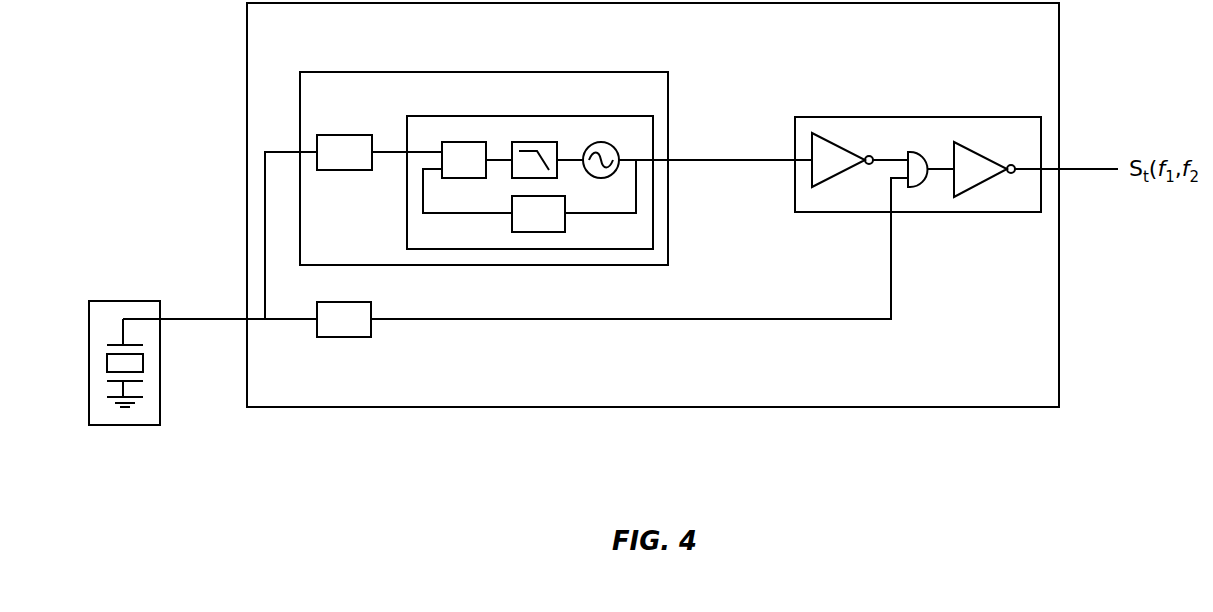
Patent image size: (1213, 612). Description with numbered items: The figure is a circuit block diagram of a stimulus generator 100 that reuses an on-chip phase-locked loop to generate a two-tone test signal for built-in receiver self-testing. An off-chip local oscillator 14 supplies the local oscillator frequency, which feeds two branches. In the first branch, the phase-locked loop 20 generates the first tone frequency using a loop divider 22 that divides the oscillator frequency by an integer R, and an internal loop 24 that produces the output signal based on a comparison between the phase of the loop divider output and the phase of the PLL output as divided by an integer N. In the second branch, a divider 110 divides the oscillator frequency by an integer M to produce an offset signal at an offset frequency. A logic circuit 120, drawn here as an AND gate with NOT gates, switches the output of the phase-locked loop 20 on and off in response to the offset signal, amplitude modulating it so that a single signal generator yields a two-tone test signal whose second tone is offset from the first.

The stimulus generator 100 is at (1038, 40).
The off-chip local oscillator 14 is at (127, 425).
The phase-locked loop 20 is at (531, 72).
The loop divider 22 is at (335, 135).
The internal loop 24 is at (560, 116).
The divider 110 is at (352, 337).
The logic circuit 120 is at (957, 212).